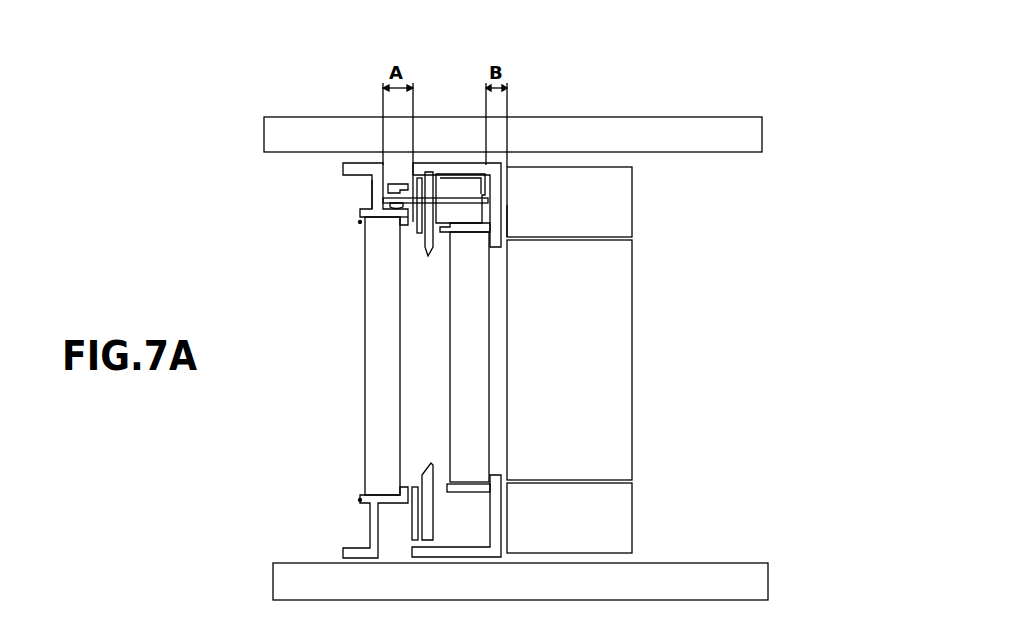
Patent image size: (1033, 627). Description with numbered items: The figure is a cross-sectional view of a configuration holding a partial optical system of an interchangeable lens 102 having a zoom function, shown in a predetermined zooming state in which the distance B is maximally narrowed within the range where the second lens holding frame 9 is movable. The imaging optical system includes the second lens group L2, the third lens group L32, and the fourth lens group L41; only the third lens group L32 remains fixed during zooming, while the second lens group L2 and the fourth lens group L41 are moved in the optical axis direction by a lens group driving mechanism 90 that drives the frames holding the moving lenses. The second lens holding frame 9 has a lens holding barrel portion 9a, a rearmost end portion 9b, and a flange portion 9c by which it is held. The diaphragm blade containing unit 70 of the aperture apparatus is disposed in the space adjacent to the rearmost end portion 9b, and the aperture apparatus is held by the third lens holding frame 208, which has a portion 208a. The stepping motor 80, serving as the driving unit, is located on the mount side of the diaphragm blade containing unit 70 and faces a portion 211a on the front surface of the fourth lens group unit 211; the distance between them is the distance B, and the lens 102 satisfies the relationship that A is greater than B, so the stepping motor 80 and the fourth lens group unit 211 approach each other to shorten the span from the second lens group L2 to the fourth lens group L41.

The interchangeable lens 102 is at (713, 51).
The lens group driving mechanism 90 is at (703, 127).
The stepping motor 80 is at (458, 190).
The diaphragm blade containing unit 70 is at (440, 262).
The second lens holding frame 9 is at (360, 222).
The lens holding barrel portion 9a is at (388, 215).
The rearmost end portion 9b is at (402, 228).
The flange portion 9c is at (385, 187).
The third lens holding frame 208 is at (503, 182).
The flange portion 208a is at (490, 226).
The fourth lens group unit 211 is at (598, 211).
The portion facing the stepping motor 211a is at (507, 221).
The second lens group L2 is at (382, 356).
The third lens group L32 is at (469, 357).
The fourth lens group L41 is at (569, 360).